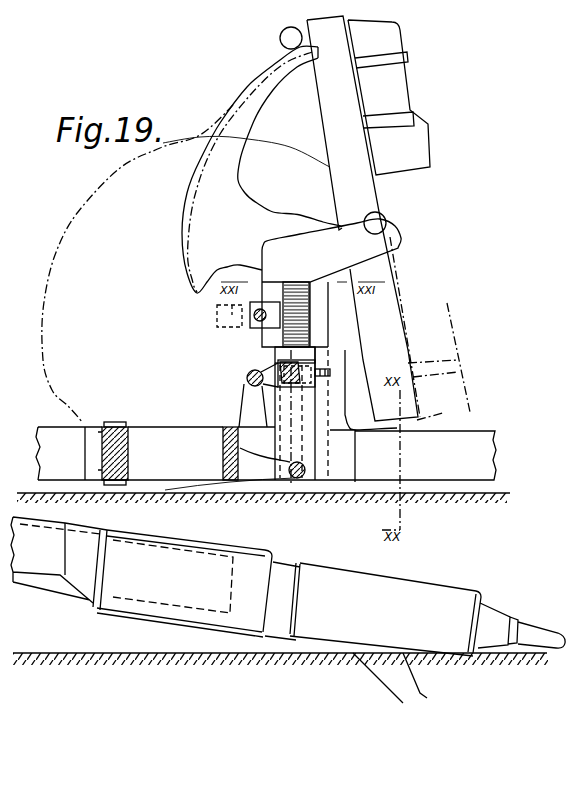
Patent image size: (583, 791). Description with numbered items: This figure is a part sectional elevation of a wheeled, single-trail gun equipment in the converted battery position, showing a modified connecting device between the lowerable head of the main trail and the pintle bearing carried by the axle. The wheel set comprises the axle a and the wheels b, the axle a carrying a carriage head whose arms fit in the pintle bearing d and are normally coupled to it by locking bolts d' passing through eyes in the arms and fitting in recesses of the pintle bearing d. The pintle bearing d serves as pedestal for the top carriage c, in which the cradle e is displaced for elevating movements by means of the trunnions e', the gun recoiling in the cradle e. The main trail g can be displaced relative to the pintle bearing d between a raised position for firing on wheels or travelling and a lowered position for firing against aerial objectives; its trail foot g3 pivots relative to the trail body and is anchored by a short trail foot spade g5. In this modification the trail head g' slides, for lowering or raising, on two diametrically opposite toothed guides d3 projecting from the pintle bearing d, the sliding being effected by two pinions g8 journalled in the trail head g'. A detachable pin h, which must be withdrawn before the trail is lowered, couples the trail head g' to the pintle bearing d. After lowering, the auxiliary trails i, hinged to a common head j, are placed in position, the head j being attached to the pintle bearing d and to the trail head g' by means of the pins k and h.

The axle a is at (217, 314).
The wheels b is at (291, 154).
The top carriage c is at (399, 236).
The pintle bearing d is at (306, 314).
The locking bolts d' is at (240, 333).
The toothed guides d3 is at (288, 296).
The cradle e is at (376, 218).
The trunnions e' is at (394, 214).
The main trail g is at (425, 444).
The trail head g' is at (360, 416).
The trail foot g3 is at (462, 595).
The trail foot spade g5 is at (412, 682).
The pinions g8 is at (250, 388).
The pin h is at (302, 479).
The auxiliary trails i is at (58, 437).
The head j is at (148, 436).
The pin k is at (246, 378).